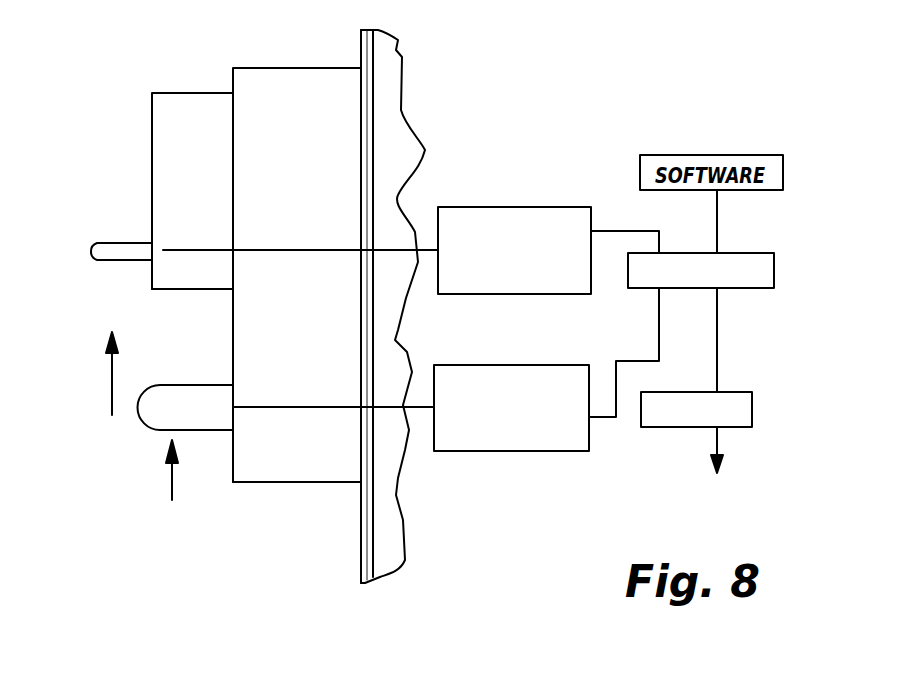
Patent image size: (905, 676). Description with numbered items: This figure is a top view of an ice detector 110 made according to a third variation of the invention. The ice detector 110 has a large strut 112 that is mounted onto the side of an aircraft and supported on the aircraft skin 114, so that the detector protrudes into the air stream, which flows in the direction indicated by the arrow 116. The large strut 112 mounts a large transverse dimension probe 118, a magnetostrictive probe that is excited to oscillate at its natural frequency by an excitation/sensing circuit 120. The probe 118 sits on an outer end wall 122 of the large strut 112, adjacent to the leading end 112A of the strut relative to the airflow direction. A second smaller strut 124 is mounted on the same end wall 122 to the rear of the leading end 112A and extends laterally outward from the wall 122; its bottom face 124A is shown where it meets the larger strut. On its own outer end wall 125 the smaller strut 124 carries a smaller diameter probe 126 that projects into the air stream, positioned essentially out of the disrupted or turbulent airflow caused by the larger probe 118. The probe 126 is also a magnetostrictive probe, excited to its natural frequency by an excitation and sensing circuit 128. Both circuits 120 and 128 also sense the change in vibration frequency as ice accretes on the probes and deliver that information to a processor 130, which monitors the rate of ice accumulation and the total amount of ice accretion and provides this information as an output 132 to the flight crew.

The ice detector 110 is at (130, 273).
The large strut 112 is at (242, 442).
The leading end of the strut 112A is at (293, 483).
The aircraft skin 114 is at (361, 47).
The arrow 116 is at (108, 388).
The probe 118 is at (175, 398).
The excitation/sensing circuit 120 is at (528, 452).
The outer end wall 122 is at (233, 165).
The second smaller strut 124 is at (170, 128).
The bottom face of housing 124A is at (173, 290).
The outer end wall 125 is at (152, 210).
The probe 126 is at (90, 250).
The excitation and sensing circuit 128 is at (477, 207).
The processor 130 is at (758, 288).
The output 132 is at (742, 428).